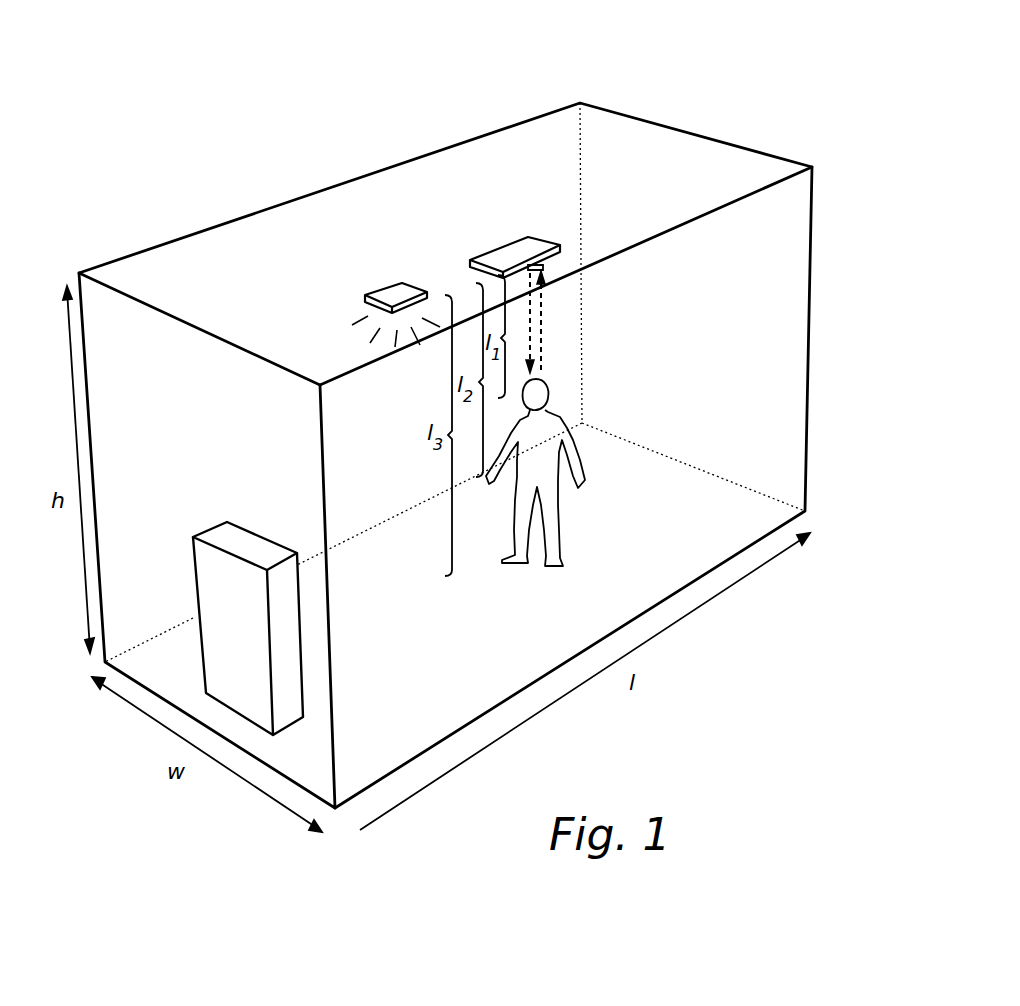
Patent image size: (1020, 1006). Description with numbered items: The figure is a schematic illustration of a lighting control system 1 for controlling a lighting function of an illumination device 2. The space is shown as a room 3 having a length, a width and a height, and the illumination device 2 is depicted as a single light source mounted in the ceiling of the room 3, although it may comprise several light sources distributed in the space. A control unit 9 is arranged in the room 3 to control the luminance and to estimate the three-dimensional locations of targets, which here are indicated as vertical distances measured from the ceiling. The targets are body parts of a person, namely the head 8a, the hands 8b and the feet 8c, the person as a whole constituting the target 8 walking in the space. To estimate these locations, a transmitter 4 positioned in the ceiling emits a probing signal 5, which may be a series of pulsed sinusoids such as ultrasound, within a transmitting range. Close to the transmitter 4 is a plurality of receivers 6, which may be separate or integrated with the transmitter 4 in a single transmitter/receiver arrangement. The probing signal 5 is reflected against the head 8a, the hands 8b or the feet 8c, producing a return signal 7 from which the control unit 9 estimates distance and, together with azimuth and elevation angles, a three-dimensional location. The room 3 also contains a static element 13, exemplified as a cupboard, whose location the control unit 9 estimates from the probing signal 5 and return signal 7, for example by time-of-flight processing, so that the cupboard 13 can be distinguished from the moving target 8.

The lighting control system 1 is at (692, 78).
The illumination device 2 is at (390, 298).
The room 3 is at (808, 378).
The transmitter 4 is at (542, 268).
The probing signal 5 is at (520, 305).
The receivers 6 is at (589, 285).
The return signal 7 is at (543, 327).
The target 8 is at (514, 480).
The head 8a is at (549, 386).
The hands 8b is at (485, 477).
The feet 8c is at (562, 561).
The control unit 9 is at (526, 250).
The static element 13 is at (212, 668).